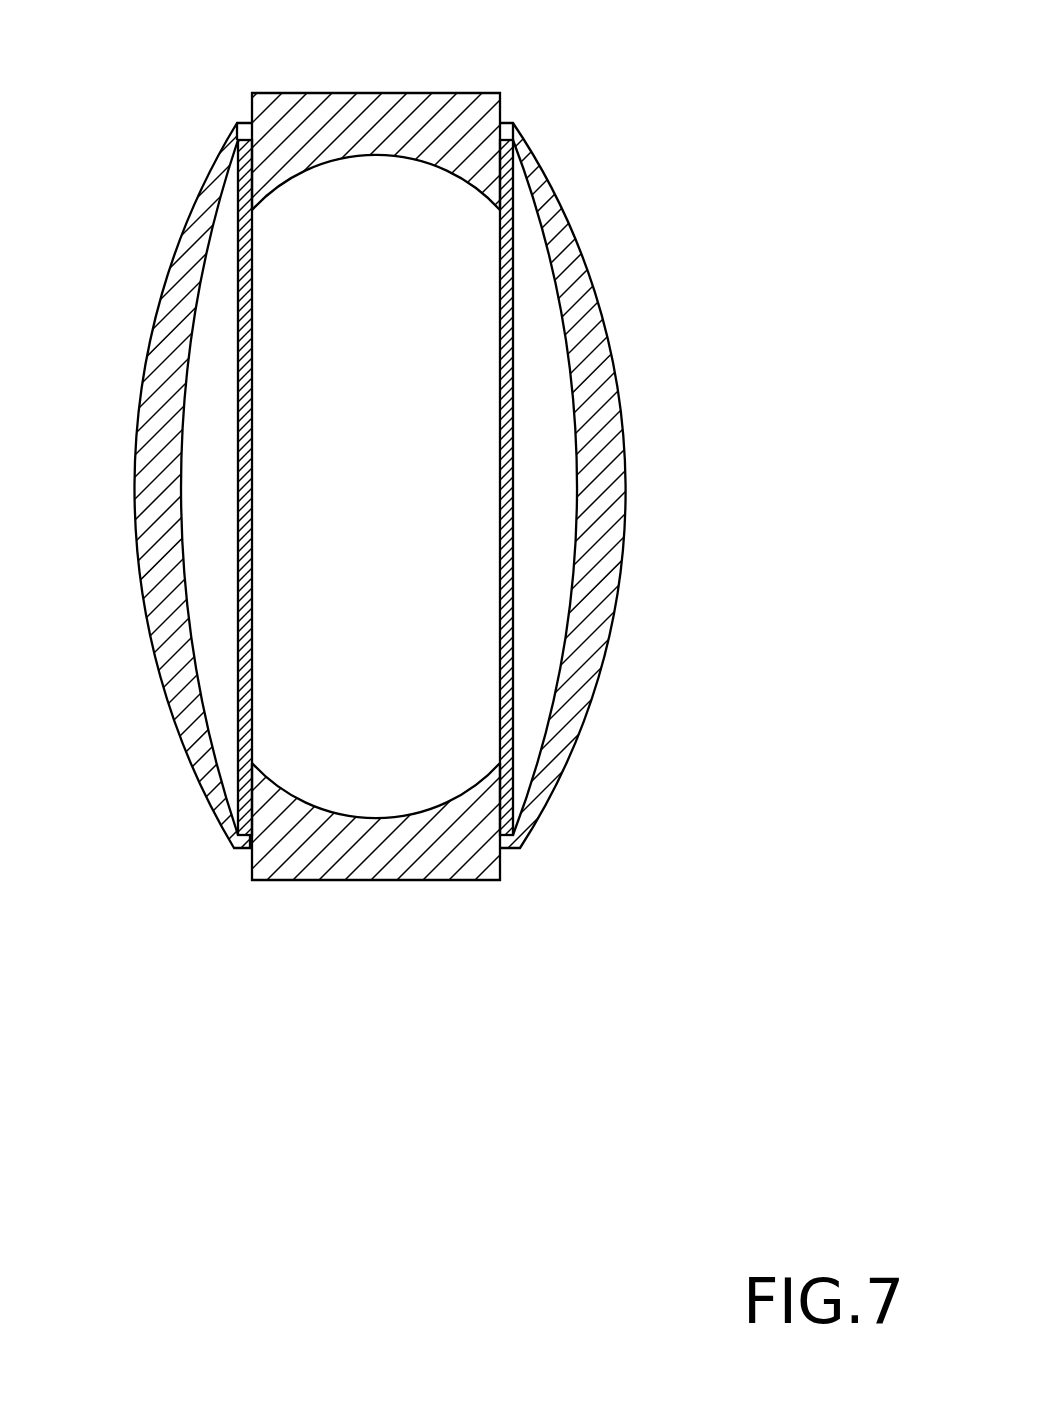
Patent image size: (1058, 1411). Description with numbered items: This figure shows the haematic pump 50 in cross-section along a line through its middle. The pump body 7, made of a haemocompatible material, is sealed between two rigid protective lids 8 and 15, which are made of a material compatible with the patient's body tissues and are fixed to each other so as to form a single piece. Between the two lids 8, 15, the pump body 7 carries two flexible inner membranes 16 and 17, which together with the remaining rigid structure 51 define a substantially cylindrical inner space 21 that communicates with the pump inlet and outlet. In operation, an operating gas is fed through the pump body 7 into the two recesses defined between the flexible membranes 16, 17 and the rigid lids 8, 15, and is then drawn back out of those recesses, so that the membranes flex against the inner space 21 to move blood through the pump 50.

The haematic pump 50 is at (637, 249).
The remaining rigid structure 51 is at (425, 122).
The pump body 7 is at (368, 906).
The rigid protective lid 8 is at (157, 438).
The rigid protective lid 15 is at (593, 390).
The flexible inner membrane 16 is at (240, 540).
The flexible inner membrane 17 is at (503, 637).
The inner space 21 is at (415, 572).